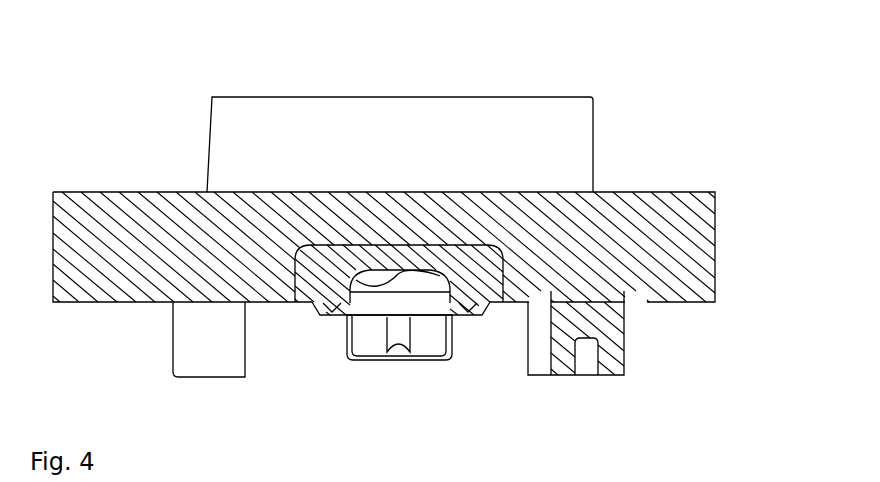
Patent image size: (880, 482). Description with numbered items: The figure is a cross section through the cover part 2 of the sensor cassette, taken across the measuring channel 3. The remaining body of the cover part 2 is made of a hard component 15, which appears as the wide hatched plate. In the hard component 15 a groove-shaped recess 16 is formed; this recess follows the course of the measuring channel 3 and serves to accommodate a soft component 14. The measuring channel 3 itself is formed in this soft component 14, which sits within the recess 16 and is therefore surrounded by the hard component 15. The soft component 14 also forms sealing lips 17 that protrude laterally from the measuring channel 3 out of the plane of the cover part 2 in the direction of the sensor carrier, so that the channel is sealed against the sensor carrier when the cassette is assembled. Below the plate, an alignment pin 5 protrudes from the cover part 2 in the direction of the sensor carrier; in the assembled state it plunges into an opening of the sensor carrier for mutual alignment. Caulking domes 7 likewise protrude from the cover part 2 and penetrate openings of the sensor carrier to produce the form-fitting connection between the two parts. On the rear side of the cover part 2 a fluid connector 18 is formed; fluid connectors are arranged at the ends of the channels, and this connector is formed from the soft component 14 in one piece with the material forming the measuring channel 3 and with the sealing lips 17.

The cover part 2 is at (692, 248).
The measuring channel 3 is at (418, 294).
The alignment pin 5 is at (365, 345).
The caulking dome 7 is at (207, 357).
The soft component 14 is at (312, 277).
The hard component 15 is at (122, 230).
The groove-shaped recess 16 is at (378, 245).
The sealing lip 17 is at (320, 318).
The fluid connector 18 is at (535, 130).